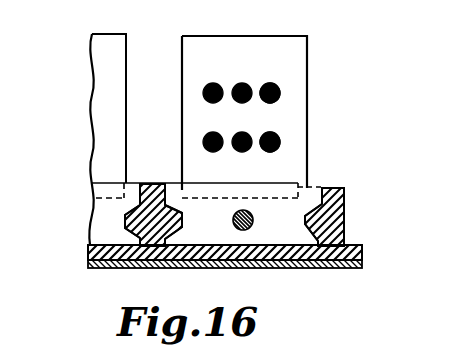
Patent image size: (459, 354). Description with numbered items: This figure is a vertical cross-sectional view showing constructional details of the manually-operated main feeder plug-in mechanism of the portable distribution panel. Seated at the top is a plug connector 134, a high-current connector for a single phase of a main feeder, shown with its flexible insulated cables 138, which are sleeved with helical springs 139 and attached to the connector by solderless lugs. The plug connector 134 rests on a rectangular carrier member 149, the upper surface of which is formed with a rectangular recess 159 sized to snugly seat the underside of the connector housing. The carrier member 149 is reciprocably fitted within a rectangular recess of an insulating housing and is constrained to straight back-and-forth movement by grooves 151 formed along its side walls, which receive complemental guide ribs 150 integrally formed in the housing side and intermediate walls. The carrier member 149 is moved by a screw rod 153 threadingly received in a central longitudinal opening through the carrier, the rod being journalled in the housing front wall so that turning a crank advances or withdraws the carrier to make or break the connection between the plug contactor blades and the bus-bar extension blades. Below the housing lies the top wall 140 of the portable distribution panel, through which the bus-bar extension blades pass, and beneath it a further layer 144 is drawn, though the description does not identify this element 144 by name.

The plug connector 134 is at (277, 22).
The flexible insulated cables 138 is at (221, 133).
The helical springs 139 is at (280, 97).
The top wall 140 is at (269, 268).
The mounting plate 144 is at (219, 267).
The carrier member 149 is at (326, 190).
The guide ribs 150 is at (156, 187).
The grooves 151 is at (181, 215).
The screw rod 153 is at (246, 209).
The rectangular recess 159 is at (299, 188).